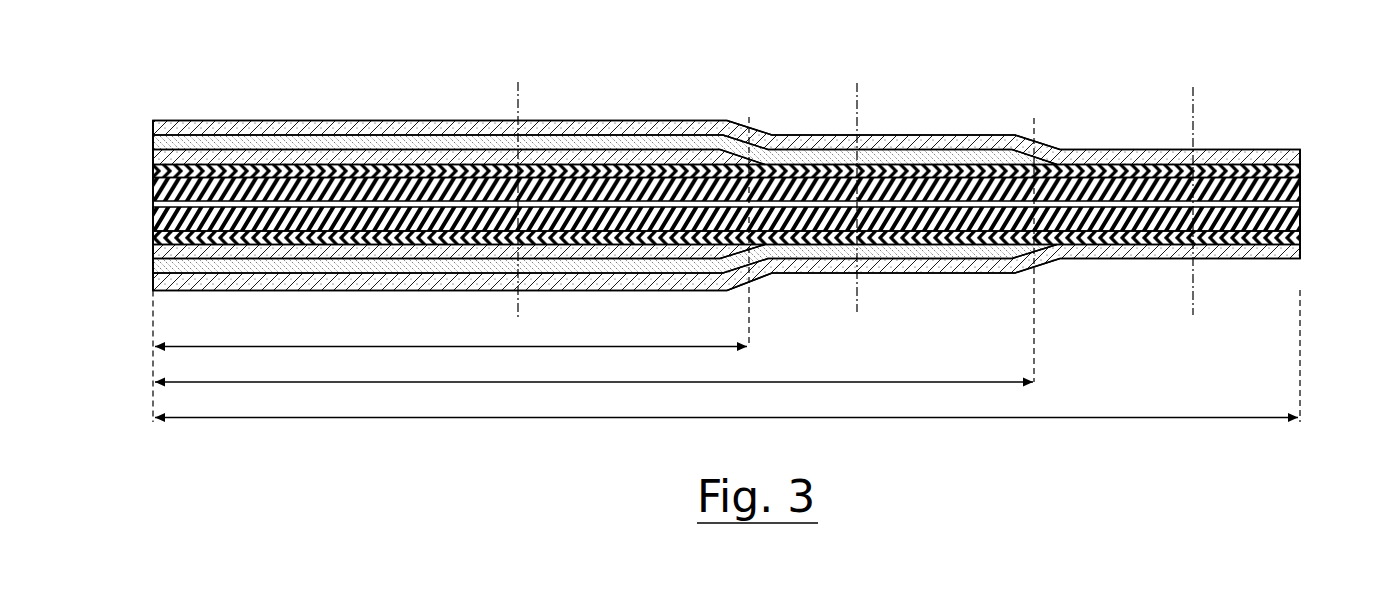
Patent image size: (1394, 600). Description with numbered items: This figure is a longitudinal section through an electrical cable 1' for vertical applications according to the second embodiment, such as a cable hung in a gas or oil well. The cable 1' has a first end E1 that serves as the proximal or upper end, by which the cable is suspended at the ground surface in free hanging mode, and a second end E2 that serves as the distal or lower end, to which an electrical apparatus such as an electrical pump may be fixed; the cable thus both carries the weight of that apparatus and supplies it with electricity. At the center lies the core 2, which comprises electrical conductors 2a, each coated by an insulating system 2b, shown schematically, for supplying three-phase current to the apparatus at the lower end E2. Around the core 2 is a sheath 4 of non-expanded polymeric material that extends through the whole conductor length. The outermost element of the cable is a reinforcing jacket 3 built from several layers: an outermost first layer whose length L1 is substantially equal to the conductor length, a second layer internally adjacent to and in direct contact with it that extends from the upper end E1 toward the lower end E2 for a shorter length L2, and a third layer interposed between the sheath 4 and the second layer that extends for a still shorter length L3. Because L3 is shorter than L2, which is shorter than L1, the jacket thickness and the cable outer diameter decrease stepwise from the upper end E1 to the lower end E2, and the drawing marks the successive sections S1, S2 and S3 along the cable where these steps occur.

The electrical cable 1' is at (733, 146).
The core 2 is at (726, 204).
The electrical conductors 2a is at (355, 207).
The insulating system 2b is at (252, 227).
The reinforcing jacket 3 is at (726, 168).
The sheath 4 is at (298, 171).
The first end E1 is at (136, 191).
The second end E2 is at (1324, 190).
The first section S1 is at (515, 98).
The second section S2 is at (854, 97).
The third section S3 is at (1191, 98).
The length of the first layer L1 is at (727, 356).
The length of the second layer L2 is at (594, 251).
The length of the third layer L3 is at (451, 269).